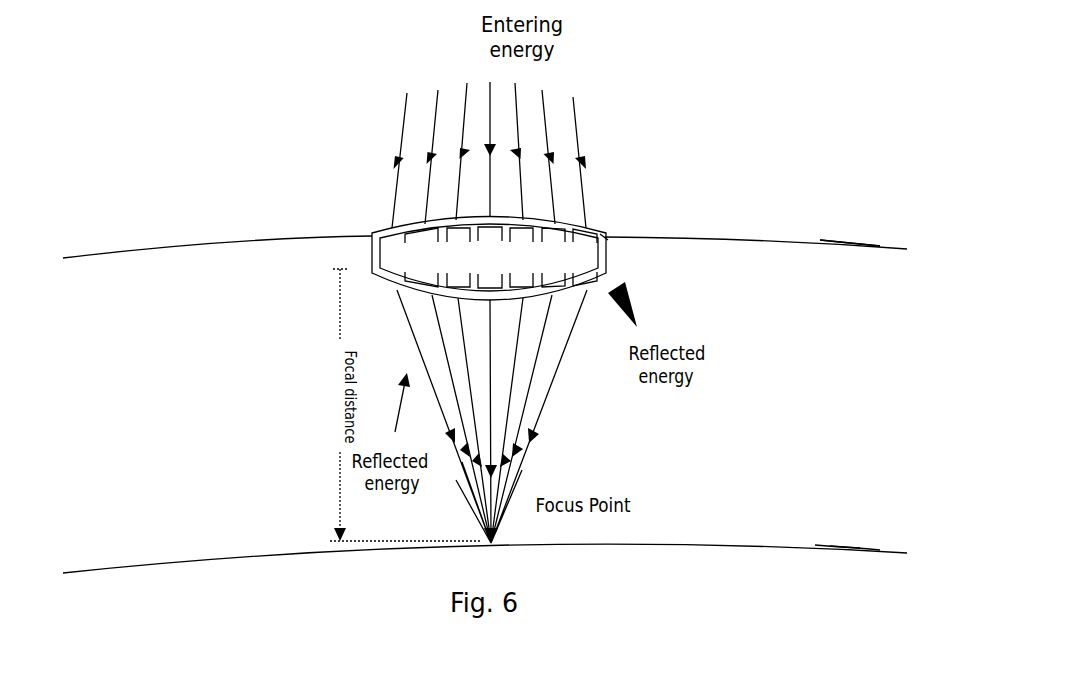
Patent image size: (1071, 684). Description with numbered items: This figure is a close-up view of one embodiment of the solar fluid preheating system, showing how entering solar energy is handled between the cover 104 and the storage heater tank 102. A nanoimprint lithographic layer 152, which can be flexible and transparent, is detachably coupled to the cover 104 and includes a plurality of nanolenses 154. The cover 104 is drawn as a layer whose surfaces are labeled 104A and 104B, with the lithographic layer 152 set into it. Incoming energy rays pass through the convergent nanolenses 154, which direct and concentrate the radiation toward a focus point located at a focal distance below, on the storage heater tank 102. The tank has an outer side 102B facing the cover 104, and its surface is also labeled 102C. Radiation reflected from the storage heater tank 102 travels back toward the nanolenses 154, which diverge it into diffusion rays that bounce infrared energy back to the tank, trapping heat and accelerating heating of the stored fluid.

The nanoimprint lithographic layer 152 is at (385, 225).
The nanolenses 154 is at (603, 235).
The cover 104 is at (750, 242).
The lower surface of top layer 104A is at (846, 242).
The upper surface of top layer 104B is at (845, 245).
The storage heater tank 102 is at (750, 542).
The outer side 102B is at (841, 559).
The upper surface of bottom layer 102C is at (861, 539).